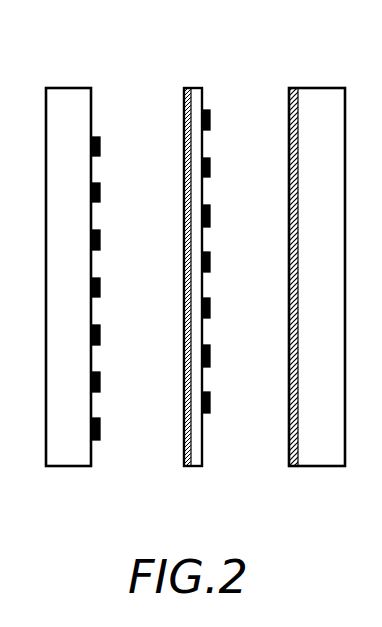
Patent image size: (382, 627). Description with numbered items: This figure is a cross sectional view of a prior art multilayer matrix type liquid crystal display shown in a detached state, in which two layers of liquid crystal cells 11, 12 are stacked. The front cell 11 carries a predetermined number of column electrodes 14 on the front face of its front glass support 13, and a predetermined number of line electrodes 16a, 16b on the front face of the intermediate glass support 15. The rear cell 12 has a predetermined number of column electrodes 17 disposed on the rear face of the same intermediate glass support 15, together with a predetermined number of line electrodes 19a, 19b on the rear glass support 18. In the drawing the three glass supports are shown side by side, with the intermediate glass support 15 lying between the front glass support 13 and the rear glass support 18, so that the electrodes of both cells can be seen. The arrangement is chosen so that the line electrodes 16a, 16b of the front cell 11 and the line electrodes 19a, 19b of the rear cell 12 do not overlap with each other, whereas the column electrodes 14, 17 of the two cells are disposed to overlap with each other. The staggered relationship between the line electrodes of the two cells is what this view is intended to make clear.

The front liquid crystal cell 11 is at (343, 58).
The rear liquid crystal cell 12 is at (167, 60).
The front glass support 13 is at (320, 95).
The column electrodes 14 is at (291, 88).
The intermediate glass support 15 is at (192, 90).
The line electrode 16a is at (210, 116).
The line electrode 16b is at (210, 172).
The column electrodes 17 is at (187, 132).
The rear glass support 18 is at (63, 103).
The line electrode 19a is at (94, 137).
The line electrode 19b is at (100, 193).